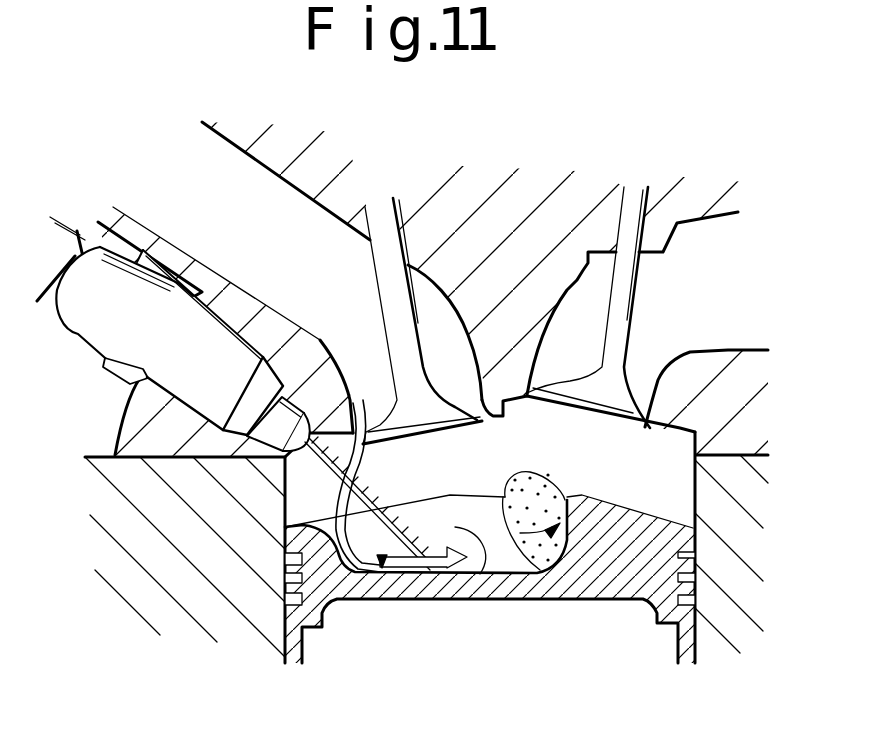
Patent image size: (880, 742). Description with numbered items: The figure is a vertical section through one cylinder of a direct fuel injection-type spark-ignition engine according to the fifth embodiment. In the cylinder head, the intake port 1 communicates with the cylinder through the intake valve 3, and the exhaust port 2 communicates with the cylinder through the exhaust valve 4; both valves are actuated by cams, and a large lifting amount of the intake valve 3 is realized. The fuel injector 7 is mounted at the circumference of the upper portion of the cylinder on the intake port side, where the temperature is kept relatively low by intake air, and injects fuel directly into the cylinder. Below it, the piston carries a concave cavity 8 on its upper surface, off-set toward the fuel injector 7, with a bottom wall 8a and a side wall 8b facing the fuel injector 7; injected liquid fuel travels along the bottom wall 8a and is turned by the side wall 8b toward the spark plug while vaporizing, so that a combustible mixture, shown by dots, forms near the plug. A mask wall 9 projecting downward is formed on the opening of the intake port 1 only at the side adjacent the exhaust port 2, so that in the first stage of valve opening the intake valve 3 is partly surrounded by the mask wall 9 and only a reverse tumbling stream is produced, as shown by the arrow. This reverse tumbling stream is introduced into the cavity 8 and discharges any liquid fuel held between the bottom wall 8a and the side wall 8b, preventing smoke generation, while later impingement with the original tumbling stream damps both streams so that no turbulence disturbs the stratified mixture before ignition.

The intake port 1 is at (300, 180).
The exhaust port 2 is at (692, 264).
The intake valve 3 is at (395, 256).
The exhaust valve 4 is at (620, 237).
The fuel injector 7 is at (97, 340).
The cavity 8 is at (478, 576).
The bottom wall 8a is at (383, 552).
The side wall 8b is at (503, 478).
The mask wall 9 is at (494, 422).